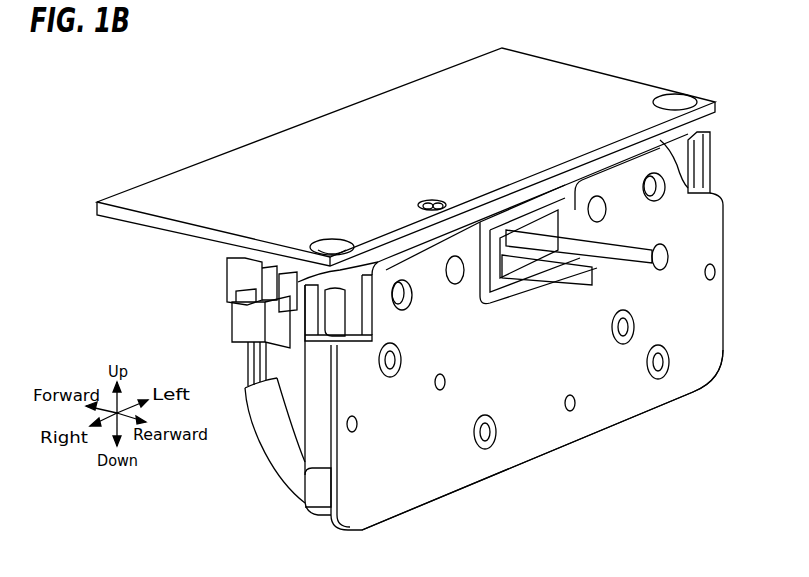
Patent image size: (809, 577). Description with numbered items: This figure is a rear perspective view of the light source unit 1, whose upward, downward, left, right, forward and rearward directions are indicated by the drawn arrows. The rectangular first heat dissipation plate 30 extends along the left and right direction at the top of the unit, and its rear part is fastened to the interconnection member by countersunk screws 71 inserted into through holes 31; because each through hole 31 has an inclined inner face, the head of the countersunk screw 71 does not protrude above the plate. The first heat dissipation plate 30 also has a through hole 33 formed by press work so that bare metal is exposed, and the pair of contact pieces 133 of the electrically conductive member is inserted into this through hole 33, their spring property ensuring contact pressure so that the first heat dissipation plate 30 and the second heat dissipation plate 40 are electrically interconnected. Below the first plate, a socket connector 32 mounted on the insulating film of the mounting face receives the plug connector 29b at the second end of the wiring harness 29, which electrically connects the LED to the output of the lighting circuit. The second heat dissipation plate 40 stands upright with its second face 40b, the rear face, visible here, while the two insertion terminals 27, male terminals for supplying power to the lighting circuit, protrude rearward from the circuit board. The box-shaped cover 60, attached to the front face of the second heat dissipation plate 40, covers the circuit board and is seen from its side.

The light source unit 1 is at (690, 393).
The insertion terminal 27 is at (582, 278).
The wiring harness 29 is at (262, 443).
The plug connector 29b is at (245, 321).
The first heat dissipation plate 30 is at (440, 82).
The through hole 31 is at (345, 243).
The socket connector 32 is at (243, 268).
The through hole 33 is at (420, 200).
The contact piece 133 is at (437, 202).
The second heat dissipation plate 40 is at (703, 306).
The second face 40b is at (417, 475).
The cover 60 is at (305, 469).
The countersunk screw 71 is at (314, 248).